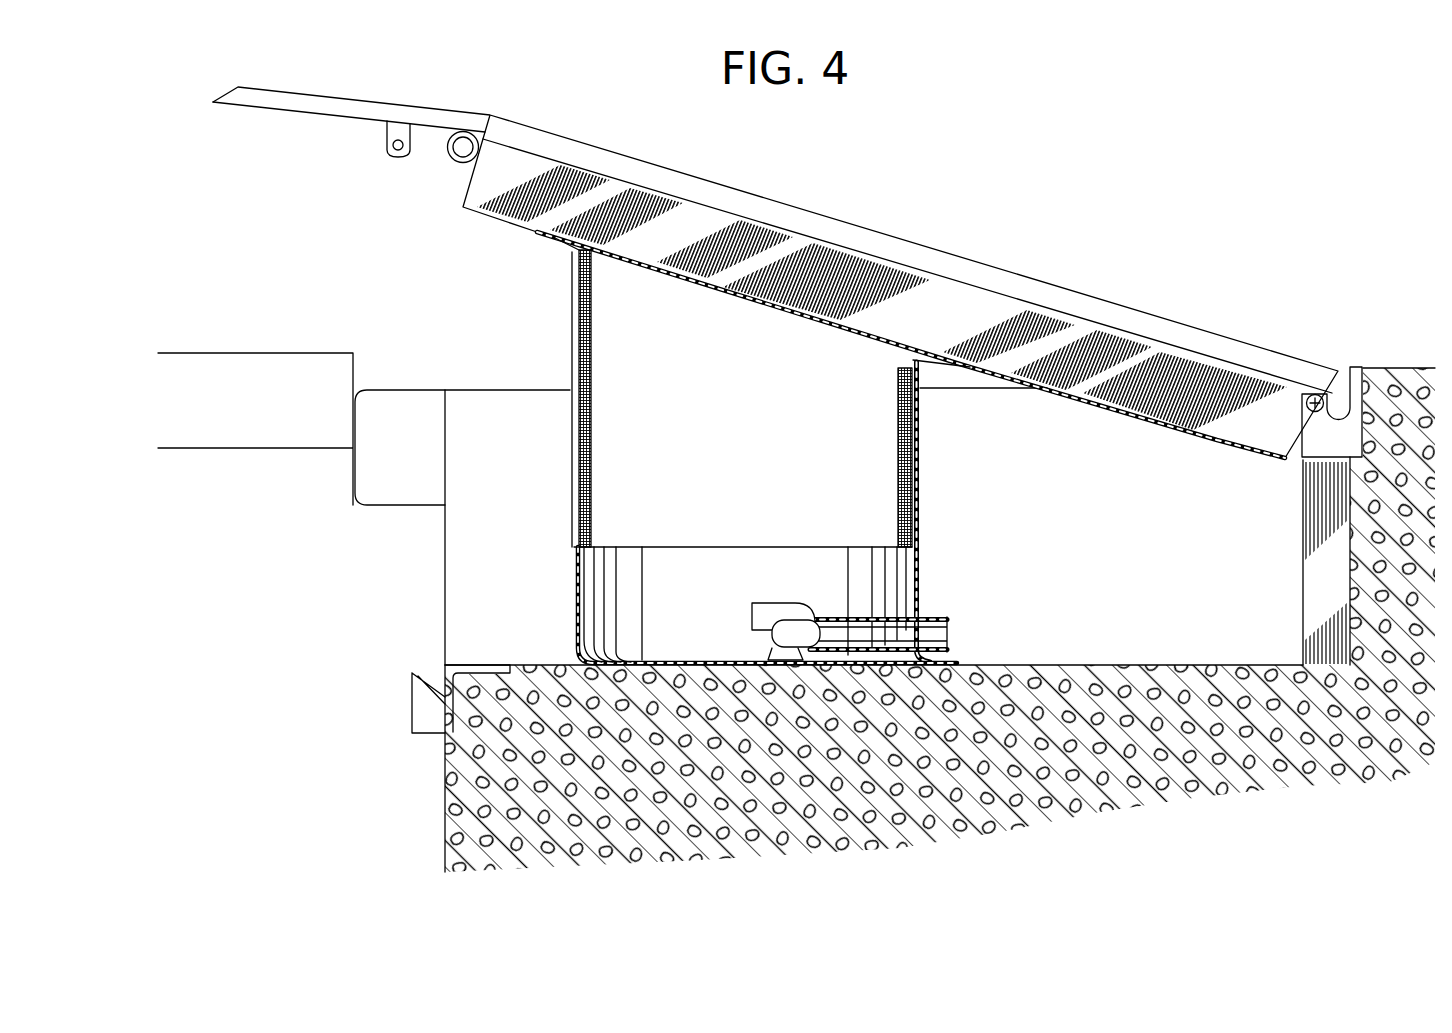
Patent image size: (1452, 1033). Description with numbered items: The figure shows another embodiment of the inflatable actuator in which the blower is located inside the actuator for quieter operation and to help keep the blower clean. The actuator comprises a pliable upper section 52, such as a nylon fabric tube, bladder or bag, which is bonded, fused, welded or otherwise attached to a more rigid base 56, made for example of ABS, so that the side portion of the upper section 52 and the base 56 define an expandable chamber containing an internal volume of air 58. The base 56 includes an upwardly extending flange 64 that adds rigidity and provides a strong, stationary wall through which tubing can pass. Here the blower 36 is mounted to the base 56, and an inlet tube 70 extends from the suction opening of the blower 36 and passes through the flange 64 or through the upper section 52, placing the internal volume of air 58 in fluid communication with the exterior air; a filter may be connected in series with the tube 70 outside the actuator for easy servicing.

The blower 36 is at (768, 603).
The pliable upper section 52 is at (921, 438).
The base 56 is at (692, 660).
The internal volume of air 58 is at (757, 407).
The upwardly extending flange 64 is at (920, 588).
The inlet tube 70 is at (933, 611).